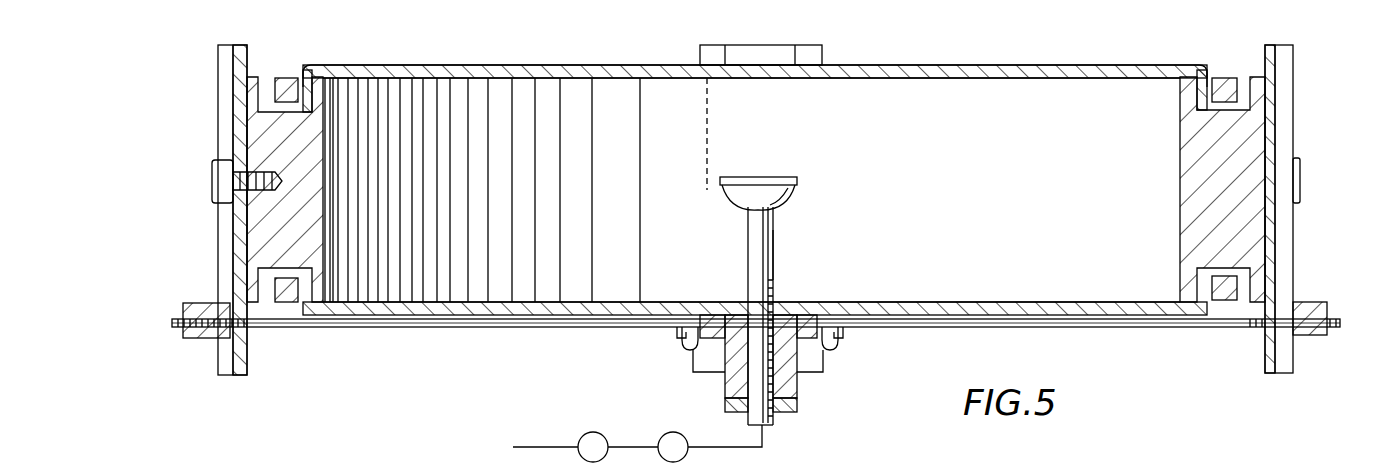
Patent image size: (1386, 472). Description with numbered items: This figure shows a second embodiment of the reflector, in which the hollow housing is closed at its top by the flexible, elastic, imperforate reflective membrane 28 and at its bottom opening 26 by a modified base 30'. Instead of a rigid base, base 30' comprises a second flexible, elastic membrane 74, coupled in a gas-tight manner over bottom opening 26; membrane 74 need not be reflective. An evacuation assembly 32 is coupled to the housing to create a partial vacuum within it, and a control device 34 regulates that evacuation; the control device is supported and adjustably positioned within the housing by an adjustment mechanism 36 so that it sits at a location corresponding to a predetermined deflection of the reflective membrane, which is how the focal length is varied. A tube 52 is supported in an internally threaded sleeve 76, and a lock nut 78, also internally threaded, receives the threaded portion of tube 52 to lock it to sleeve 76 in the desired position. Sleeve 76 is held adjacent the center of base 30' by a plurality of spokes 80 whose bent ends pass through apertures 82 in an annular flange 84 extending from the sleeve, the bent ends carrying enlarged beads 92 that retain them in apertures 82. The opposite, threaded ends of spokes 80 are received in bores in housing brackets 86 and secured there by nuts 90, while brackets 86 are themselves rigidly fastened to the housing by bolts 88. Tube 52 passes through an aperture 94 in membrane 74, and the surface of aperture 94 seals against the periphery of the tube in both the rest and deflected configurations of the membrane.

The bottom opening 26 is at (330, 292).
The reflective membrane 28 is at (523, 67).
The base 30' is at (751, 343).
The evacuation assembly 32 is at (643, 428).
The control device 34 is at (790, 197).
The adjustment mechanism 36 is at (778, 256).
The tube 52 is at (752, 246).
The second flexible, elastic membrane 74 is at (470, 312).
The internally threaded sleeve 76 is at (783, 383).
The lock nut 78 is at (787, 410).
The spokes 80 is at (395, 320).
The apertures 82 is at (692, 352).
The annular flange 84 is at (677, 332).
The housing brackets 86 is at (222, 77).
The bolts 88 is at (210, 200).
The nuts 90 is at (192, 330).
The enlarged beads 92 is at (838, 345).
The aperture 94 is at (770, 302).